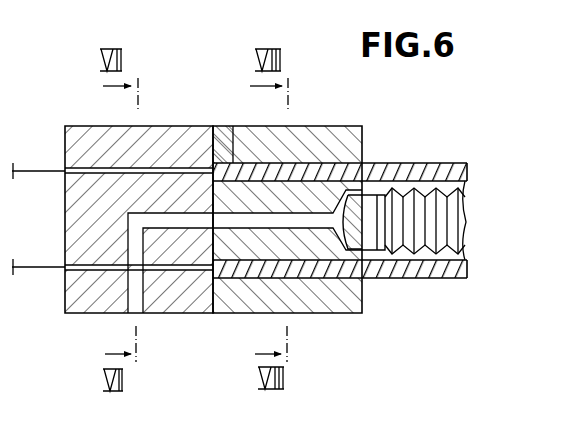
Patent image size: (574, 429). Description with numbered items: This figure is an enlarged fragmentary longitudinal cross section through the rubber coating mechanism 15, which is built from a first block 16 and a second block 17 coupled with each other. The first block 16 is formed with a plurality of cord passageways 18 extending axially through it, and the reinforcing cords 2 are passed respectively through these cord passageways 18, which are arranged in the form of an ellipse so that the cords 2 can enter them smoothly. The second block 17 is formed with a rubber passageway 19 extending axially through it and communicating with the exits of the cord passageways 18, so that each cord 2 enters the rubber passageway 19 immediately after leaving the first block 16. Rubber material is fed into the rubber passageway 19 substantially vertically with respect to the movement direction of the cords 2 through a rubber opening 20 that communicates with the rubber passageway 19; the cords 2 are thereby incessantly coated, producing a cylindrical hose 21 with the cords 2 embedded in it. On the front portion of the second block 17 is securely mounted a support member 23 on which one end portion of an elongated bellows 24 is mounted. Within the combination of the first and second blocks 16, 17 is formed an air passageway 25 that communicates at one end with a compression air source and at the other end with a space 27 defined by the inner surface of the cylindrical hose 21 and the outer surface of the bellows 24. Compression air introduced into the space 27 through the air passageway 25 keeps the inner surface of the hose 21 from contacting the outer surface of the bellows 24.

The cords 2 is at (32, 173).
The rubber coating mechanism 15 is at (313, 113).
The first block 16 is at (70, 221).
The second block 17 is at (362, 131).
The cord passageways 18 is at (80, 169).
The rubber passageway 19 is at (323, 275).
The rubber opening 20 is at (229, 126).
The cylindrical hose 21 is at (448, 163).
The support member 23 is at (372, 256).
The bellows 24 is at (456, 227).
The air passageway 25 is at (170, 214).
The space 27 is at (428, 277).